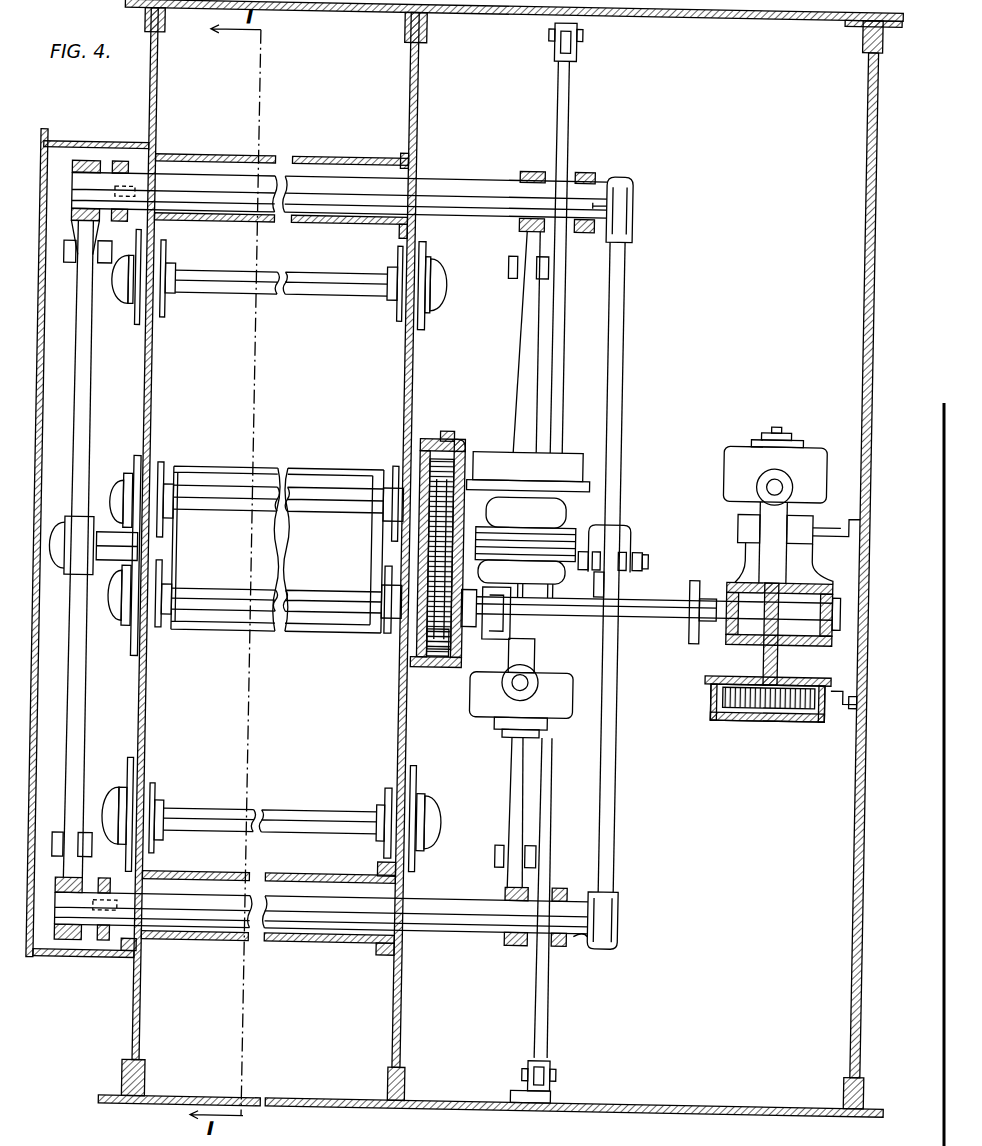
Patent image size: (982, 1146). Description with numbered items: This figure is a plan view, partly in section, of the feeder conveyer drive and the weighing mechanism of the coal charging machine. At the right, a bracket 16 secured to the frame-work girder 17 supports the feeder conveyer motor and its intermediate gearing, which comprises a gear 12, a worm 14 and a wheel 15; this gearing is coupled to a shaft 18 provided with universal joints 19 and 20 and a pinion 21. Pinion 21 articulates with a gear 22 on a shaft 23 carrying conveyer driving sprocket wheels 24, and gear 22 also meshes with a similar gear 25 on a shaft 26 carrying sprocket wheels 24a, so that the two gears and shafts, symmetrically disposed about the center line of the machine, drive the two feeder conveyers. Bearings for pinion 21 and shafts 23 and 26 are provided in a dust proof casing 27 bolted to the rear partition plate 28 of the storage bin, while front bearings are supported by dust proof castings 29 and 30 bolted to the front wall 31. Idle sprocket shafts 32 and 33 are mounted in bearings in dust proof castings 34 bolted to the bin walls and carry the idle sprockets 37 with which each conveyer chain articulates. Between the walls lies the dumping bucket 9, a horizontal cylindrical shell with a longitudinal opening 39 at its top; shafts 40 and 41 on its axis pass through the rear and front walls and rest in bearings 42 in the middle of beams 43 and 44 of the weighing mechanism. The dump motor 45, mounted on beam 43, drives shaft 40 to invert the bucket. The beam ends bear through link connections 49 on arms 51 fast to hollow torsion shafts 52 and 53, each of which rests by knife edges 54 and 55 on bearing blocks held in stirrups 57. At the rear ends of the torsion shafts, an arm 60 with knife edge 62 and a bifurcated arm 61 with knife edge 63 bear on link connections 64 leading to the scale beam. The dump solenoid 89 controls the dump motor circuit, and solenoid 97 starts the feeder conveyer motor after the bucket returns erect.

The dumping bucket 9 is at (291, 634).
The gear 12 is at (811, 698).
The worm 14 is at (759, 641).
The wheel 15 is at (760, 587).
The bracket 16 is at (797, 542).
The frame-work girder 17 is at (859, 419).
The shaft 18 is at (659, 607).
The universal joint 19 is at (697, 579).
The universal joint 20 is at (493, 642).
The pinion 21 is at (432, 637).
The gear 22 is at (412, 674).
The shaft 23 is at (322, 600).
The conveyer driving sprocket wheels 24 is at (150, 645).
The driving sprocket wheels 24a is at (159, 473).
The gear 25 is at (447, 445).
The shaft 26 is at (301, 496).
The dust proof casing 27 is at (417, 440).
The rear partition plate 28 is at (409, 357).
The dust proof casting 29 is at (134, 632).
The dust proof casting 30 is at (126, 490).
The front wall 31 is at (141, 390).
The idle sprocket shaft 32 is at (294, 812).
The idle sprocket shaft 33 is at (340, 288).
The dust proof castings 34 is at (124, 305).
The idle sprockets 37 is at (135, 323).
The longitudinal opening 39 is at (277, 549).
The shaft 40 is at (396, 553).
The shaft 41 is at (119, 552).
The bearings 42 is at (57, 538).
The beam 43 is at (518, 365).
The beam 44 is at (73, 443).
The dump motor 45 is at (551, 518).
The link connections 49 is at (58, 256).
The arms 51 is at (517, 243).
The hollow torsion shaft 52 is at (322, 943).
The hollow torsion shaft 53 is at (317, 183).
The knife edge 54 is at (586, 204).
The knife edge 55 is at (112, 200).
The stirrups 57 is at (571, 171).
The arm 60 is at (619, 791).
The bifurcated arm 61 is at (619, 346).
The knife edge 62 is at (597, 570).
The knife edge 63 is at (641, 551).
The link connections 64 is at (645, 567).
The dump solenoid 89 is at (516, 690).
The solenoid 97 is at (771, 482).